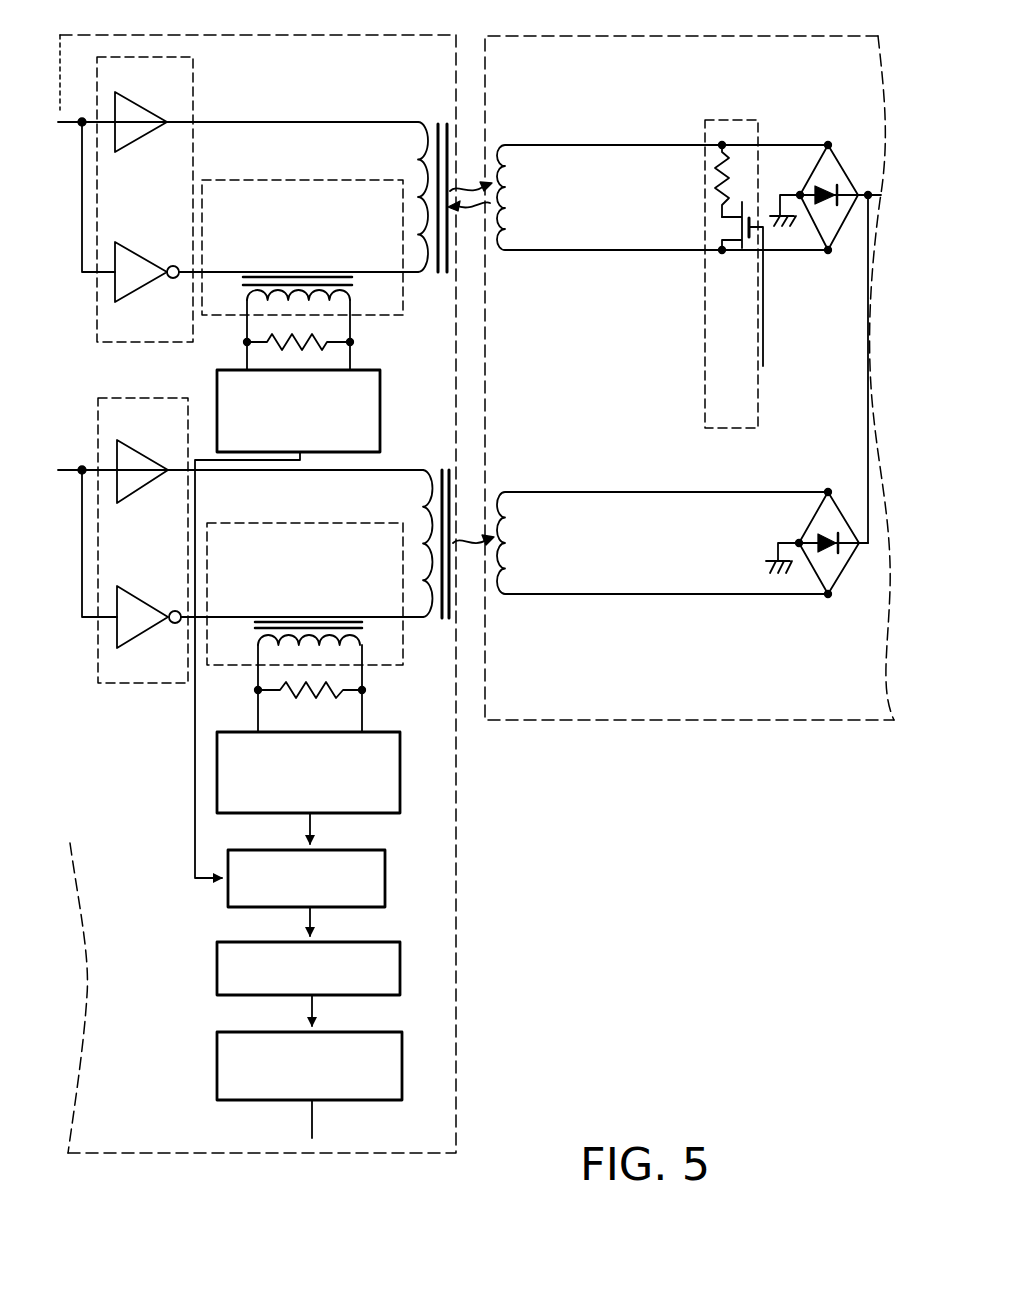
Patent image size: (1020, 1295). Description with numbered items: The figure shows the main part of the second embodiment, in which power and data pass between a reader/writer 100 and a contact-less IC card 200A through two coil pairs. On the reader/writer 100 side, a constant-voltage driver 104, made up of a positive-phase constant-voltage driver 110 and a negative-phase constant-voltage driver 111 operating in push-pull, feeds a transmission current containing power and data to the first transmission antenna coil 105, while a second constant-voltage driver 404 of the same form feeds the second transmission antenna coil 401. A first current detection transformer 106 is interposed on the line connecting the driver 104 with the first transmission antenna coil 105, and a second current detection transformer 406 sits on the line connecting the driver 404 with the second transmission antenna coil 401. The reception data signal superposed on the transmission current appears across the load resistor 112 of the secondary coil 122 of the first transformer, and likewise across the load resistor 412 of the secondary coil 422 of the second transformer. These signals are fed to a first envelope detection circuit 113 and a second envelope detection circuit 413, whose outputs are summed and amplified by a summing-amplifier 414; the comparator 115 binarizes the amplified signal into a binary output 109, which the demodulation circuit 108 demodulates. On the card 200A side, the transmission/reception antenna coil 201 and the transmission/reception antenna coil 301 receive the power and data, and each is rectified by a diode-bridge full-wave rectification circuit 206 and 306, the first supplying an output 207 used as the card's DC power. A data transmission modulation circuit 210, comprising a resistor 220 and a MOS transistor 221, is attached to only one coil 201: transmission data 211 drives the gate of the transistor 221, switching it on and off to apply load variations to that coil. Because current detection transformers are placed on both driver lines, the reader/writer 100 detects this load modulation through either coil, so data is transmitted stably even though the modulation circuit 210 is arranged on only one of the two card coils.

The reader/writer 100 is at (293, 35).
The constant-voltage driver 104 is at (142, 342).
The first transmission antenna coil 105 is at (416, 124).
The first current detection transformer 106 is at (403, 313).
The demodulation circuit 108 is at (402, 1071).
The binary output 109 is at (316, 1021).
The positive-phase constant-voltage driver 110 is at (148, 137).
The negative-phase constant-voltage driver 111 is at (148, 288).
The load resistor 112 is at (318, 333).
The first envelope detection circuit 113 is at (380, 411).
The comparator 115 is at (401, 969).
The secondary coil 122 is at (349, 294).
The contact-less IC card 200A is at (528, 35).
The transmission/reception antenna coil 201 is at (502, 147).
The full-wave rectification circuit 206 is at (838, 233).
The output 207 is at (868, 192).
The modulation circuit 210 is at (703, 395).
The transmission data 211 is at (764, 324).
The resistor 220 is at (731, 170).
The MOS transistor 221 is at (727, 226).
The transmission/reception antenna coil 301 is at (510, 528).
The full-wave rectification circuit 306 is at (834, 568).
The second transmission antenna coil 401 is at (424, 592).
The constant-voltage driver 404 is at (142, 683).
The second current detection transformer 406 is at (230, 665).
The load resistor 412 is at (306, 693).
The second envelope detection circuit 413 is at (400, 774).
The summing-amplifier 414 is at (388, 879).
The secondary coil 422 is at (352, 645).